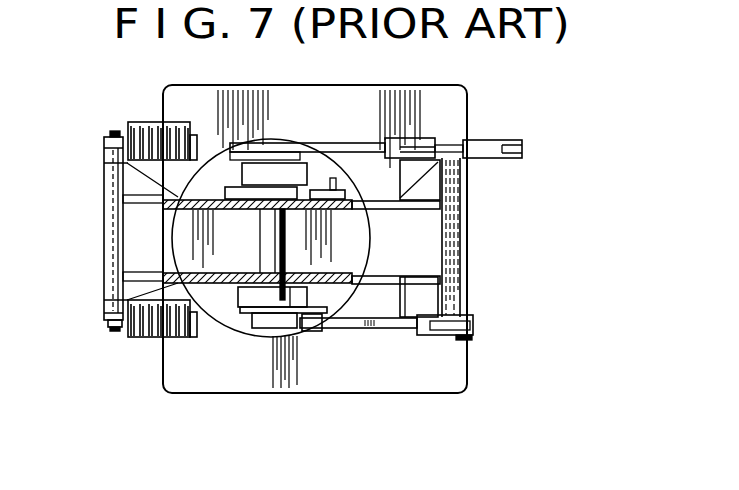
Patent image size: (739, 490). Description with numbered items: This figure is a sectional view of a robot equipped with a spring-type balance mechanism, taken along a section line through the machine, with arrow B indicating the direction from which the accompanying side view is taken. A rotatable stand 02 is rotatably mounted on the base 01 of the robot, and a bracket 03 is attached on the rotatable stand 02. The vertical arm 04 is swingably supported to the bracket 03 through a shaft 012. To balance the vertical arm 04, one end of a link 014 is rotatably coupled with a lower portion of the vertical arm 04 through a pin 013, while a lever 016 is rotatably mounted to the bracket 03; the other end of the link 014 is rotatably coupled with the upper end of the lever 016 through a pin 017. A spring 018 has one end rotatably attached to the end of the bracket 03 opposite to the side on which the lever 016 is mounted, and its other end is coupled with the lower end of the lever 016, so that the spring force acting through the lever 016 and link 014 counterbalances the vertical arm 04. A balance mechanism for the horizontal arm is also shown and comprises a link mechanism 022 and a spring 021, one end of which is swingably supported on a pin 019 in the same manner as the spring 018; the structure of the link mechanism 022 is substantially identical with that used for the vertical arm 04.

The base 01 is at (431, 380).
The rotatable stand 02 is at (367, 225).
The bracket 03 is at (377, 280).
The vertical arm 04 is at (246, 306).
The shaft 012 is at (263, 250).
The pin 013 is at (315, 332).
The link 014 is at (387, 330).
The lever 016 is at (474, 325).
The pin 017 is at (470, 339).
The spring 018 is at (147, 338).
The pin 019 is at (105, 239).
The spring 021 is at (148, 124).
The link mechanism 022 is at (308, 122).
The arrow B is at (313, 410).